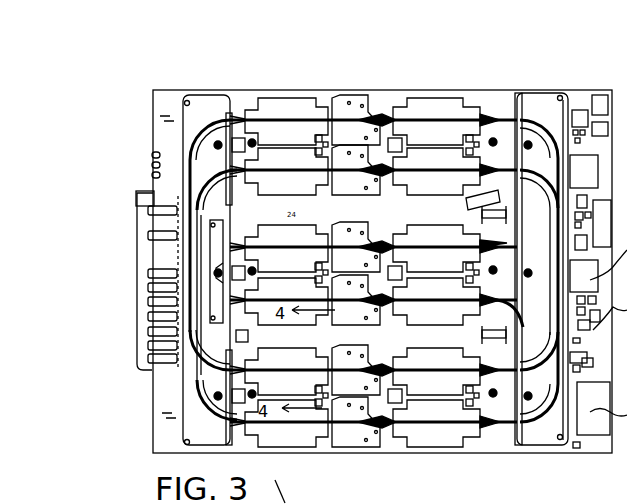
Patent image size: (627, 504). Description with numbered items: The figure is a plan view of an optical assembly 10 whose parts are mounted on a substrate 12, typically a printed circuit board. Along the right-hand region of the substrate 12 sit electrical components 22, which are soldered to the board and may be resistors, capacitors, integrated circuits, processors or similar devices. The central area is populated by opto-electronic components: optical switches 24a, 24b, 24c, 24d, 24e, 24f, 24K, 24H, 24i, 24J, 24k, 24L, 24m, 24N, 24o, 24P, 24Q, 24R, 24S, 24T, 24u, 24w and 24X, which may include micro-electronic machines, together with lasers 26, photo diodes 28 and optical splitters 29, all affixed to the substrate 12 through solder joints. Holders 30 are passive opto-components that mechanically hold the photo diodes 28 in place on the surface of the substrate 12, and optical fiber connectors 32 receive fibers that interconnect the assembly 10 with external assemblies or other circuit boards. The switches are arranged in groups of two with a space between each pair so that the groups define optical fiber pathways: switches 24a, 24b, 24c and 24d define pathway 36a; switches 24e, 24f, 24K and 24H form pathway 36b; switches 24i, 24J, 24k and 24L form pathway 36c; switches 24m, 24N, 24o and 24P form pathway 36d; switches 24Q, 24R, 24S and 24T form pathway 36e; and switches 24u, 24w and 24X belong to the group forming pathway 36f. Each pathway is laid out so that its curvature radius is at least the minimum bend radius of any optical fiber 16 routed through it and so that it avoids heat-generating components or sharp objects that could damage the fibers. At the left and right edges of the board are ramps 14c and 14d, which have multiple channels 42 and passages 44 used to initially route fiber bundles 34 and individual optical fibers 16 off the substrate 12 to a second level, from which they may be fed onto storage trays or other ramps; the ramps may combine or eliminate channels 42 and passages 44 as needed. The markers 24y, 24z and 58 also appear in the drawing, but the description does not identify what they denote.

The optical assembly 10 is at (339, 43).
The substrate 12 is at (152, 113).
The ramp 14c is at (183, 90).
The ramp 14d is at (547, 90).
The optical fiber 16 is at (488, 90).
The electrical components 22 is at (518, 452).
The optical switch 24a is at (286, 109).
The optical switch 24b is at (286, 132).
The optical switch 24c is at (436, 109).
The optical switch 24d is at (436, 132).
The optical switch 24e is at (286, 159).
The optical switch 24f is at (286, 182).
The optical switch 24K is at (436, 159).
The optical switch 24H is at (436, 182).
The optical switch 24i is at (286, 236).
The optical switch 24J is at (286, 259).
The optical switch 24k is at (436, 236).
The optical switch 24L is at (436, 259).
The optical switch 24m is at (286, 289).
The optical switch 24N is at (286, 312).
The optical switch 24o is at (436, 289).
The optical switch 24P is at (436, 312).
The optical switch 24Q is at (286, 359).
The optical switch 24R is at (286, 382).
The optical switch 24S is at (436, 359).
The optical switch 24T is at (436, 382).
The optical switch 24u is at (286, 411).
The splice holder position 24y is at (286, 434).
The optical switch 24w is at (436, 411).
The optical switch 24X is at (436, 434).
The splice holder position 24z is at (232, 445).
The laser 26 is at (477, 340).
The photo diode 28 is at (328, 90).
The optical splitter 29 is at (330, 327).
The holder 30 is at (364, 271).
The optical fiber connector 32 is at (137, 313).
The fiber bundle 34 is at (393, 88).
The optical fiber pathway 36a is at (296, 88).
The optical fiber pathway 36b is at (160, 178).
The optical fiber pathway 36c is at (165, 220).
The optical fiber pathway 36d is at (394, 334).
The optical fiber pathway 36e is at (397, 356).
The optical fiber pathway 36f is at (470, 450).
The channel 42 is at (152, 137).
The passage 44 is at (150, 253).
The fiber end 58 is at (523, 221).